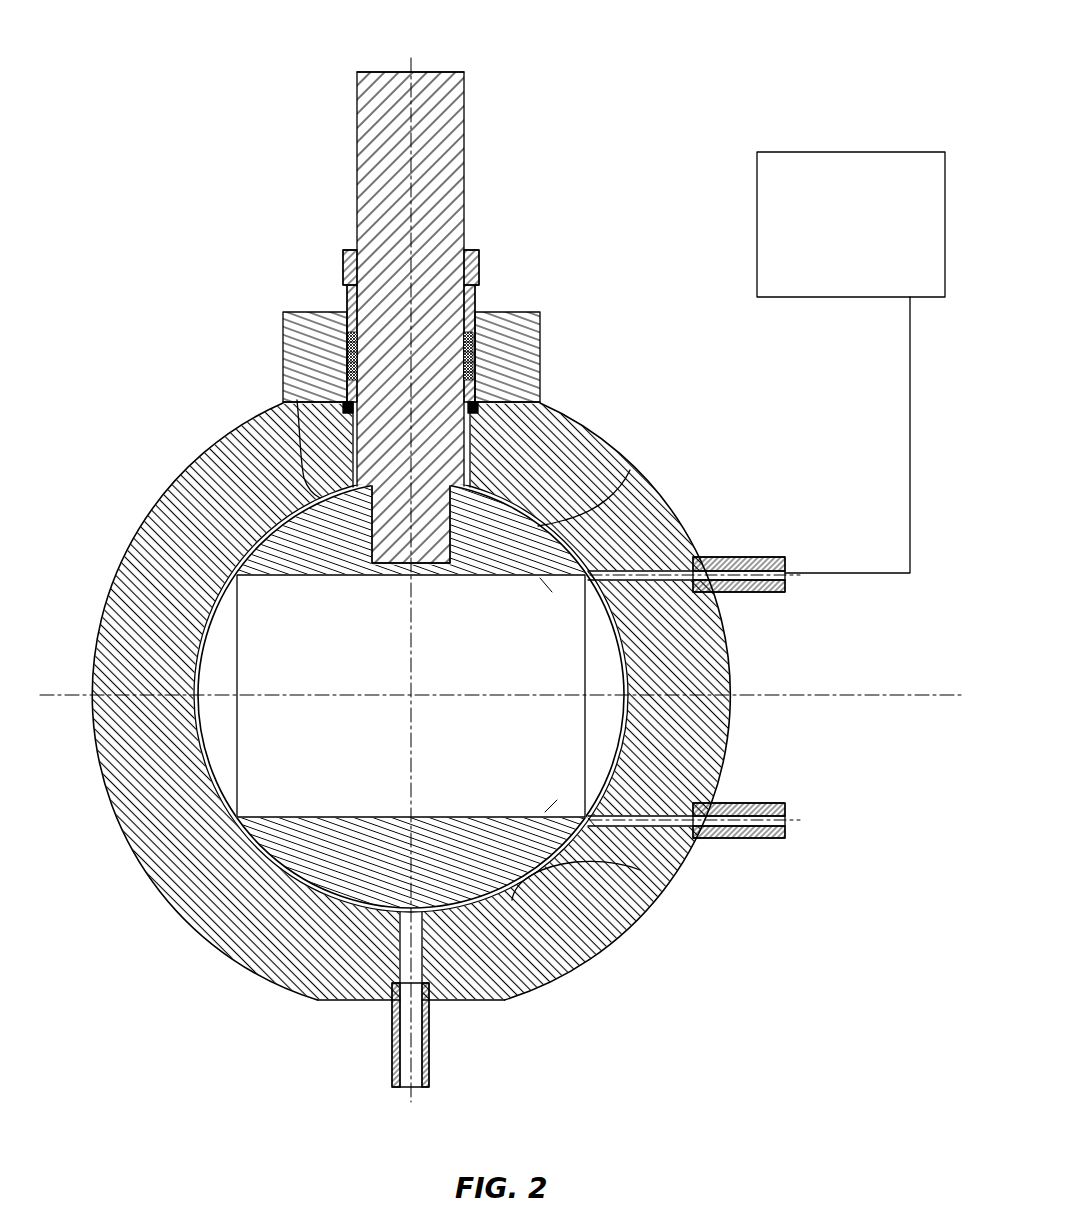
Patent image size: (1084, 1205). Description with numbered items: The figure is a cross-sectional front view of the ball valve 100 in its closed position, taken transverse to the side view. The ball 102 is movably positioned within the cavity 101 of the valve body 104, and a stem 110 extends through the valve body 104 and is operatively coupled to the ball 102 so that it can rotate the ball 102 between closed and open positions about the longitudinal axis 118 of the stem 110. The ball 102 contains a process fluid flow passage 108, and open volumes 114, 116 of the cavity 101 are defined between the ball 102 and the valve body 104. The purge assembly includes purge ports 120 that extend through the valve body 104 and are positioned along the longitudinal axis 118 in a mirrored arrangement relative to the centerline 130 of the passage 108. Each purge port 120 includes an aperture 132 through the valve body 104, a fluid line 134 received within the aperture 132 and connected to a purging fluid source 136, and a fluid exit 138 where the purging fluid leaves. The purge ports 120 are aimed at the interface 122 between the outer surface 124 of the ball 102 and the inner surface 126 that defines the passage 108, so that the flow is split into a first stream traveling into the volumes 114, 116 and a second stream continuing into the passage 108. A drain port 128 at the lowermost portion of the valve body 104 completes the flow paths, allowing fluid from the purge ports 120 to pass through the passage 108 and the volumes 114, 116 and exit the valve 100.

The ball valve 100 is at (661, 196).
The cavity 101 is at (534, 513).
The ball 102 is at (367, 925).
The valve body 104 is at (170, 550).
The process fluid flow passage 108 is at (332, 754).
The stem 110 is at (430, 143).
The volume 114 is at (297, 400).
The volume 116 is at (512, 900).
The longitudinal axis 118 is at (410, 53).
The purge port 120 is at (771, 558).
The interface 122 is at (668, 573).
The outer surface 124 is at (630, 470).
The inner surface 126 is at (590, 577).
The drain port 128 is at (412, 1020).
The centerline 130 is at (915, 693).
The aperture 132 is at (672, 571).
The fluid line 134 is at (740, 592).
The purging fluid source 136 is at (851, 362).
The fluid exit 138 is at (541, 579).